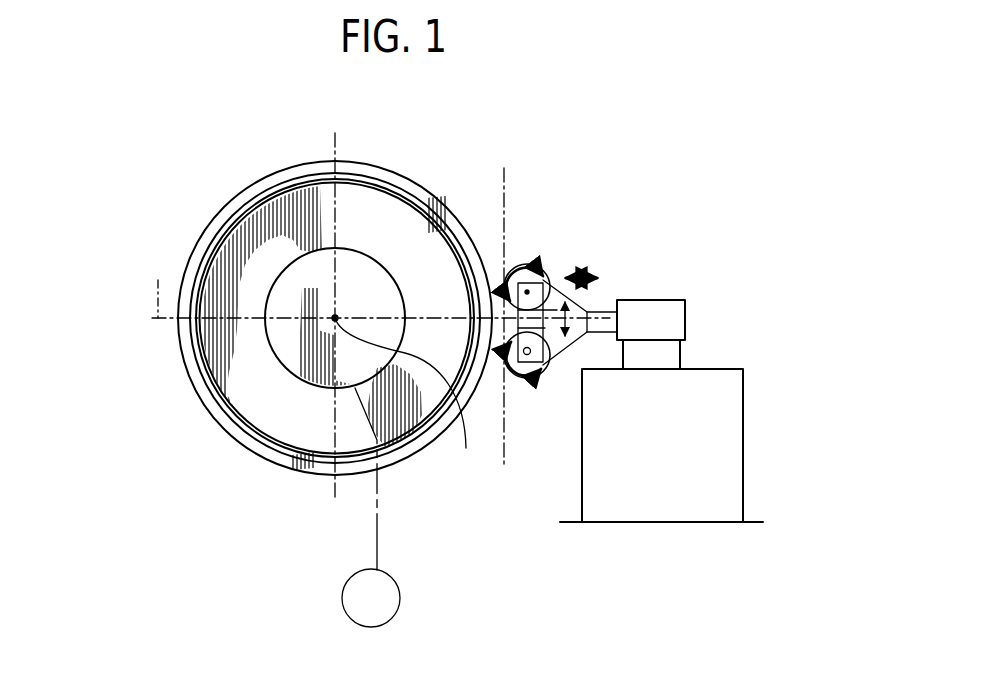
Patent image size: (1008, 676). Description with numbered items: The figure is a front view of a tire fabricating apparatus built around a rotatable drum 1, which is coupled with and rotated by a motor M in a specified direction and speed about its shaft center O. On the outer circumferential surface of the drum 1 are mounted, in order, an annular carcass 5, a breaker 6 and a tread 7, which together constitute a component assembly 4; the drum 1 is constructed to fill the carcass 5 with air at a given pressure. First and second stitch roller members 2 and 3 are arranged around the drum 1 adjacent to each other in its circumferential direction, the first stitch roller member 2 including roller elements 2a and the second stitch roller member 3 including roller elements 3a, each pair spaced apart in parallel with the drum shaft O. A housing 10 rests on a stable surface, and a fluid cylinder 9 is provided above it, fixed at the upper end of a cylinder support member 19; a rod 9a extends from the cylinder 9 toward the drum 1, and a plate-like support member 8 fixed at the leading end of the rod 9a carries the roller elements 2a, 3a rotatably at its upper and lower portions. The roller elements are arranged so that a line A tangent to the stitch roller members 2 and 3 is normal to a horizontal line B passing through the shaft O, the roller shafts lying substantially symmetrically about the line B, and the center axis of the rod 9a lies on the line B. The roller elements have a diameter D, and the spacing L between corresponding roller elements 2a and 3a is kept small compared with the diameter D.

The rotatable drum 1 is at (290, 263).
The component assembly 4 is at (405, 170).
The annular carcass 5 is at (215, 404).
The breaker 6 is at (228, 433).
The tread 7 is at (272, 470).
The first stitch roller member 2 is at (546, 264).
The first roller element 2a is at (540, 256).
The second stitch roller member 3 is at (538, 383).
The second roller element 3a is at (530, 380).
The support member 8 is at (597, 318).
The fluid cylinder 9 is at (678, 297).
The rod 9a is at (607, 322).
The cylinder support member 19 is at (670, 353).
The housing 10 is at (728, 412).
The tangent line A is at (510, 176).
The horizontal line B is at (158, 280).
The roller element diameter D is at (545, 280).
The roller element spacing L is at (582, 334).
The shaft center O is at (403, 397).
The motor M is at (371, 507).